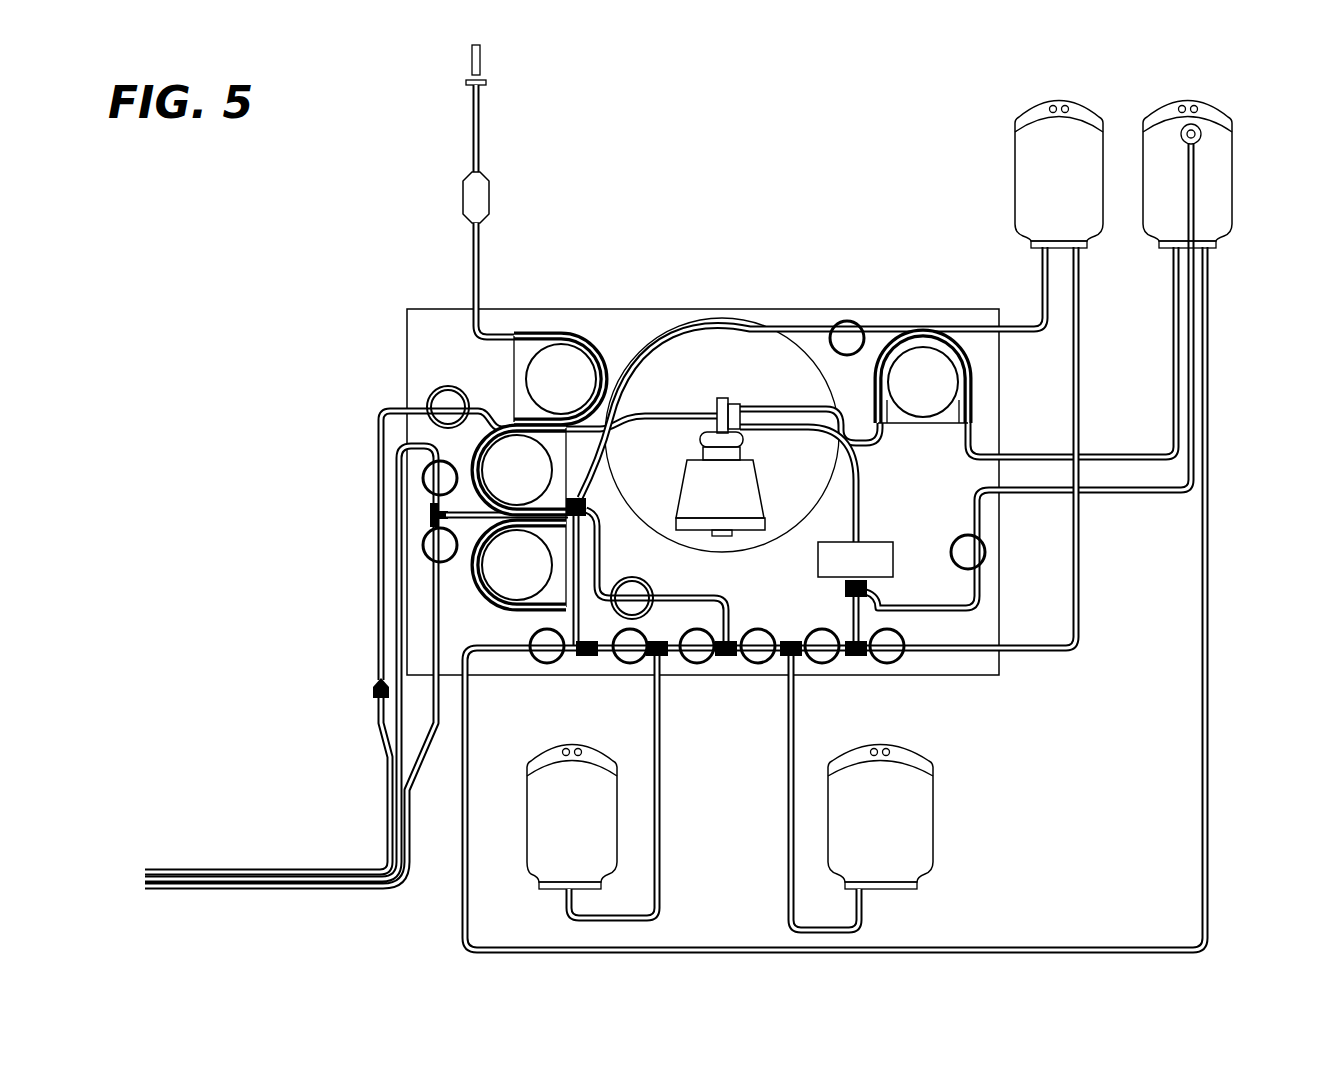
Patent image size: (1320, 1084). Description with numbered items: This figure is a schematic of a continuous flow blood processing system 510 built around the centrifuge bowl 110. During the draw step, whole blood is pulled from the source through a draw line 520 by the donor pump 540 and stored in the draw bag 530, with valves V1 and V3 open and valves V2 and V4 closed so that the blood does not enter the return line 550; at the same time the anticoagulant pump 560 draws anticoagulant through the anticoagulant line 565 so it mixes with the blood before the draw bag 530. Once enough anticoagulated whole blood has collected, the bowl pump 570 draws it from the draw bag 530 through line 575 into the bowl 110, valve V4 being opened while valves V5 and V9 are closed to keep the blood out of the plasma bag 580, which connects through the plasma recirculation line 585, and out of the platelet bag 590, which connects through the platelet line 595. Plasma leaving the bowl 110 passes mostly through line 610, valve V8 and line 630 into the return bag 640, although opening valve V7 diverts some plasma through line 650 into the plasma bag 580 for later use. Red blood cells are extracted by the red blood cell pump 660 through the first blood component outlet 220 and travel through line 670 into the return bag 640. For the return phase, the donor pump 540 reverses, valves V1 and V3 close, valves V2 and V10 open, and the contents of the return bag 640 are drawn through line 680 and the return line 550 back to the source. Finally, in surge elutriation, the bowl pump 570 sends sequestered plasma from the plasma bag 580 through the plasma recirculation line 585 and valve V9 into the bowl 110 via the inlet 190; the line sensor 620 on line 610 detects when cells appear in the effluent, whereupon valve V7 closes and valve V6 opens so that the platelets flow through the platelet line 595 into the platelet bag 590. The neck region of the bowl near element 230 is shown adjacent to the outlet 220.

The blood processing system 510 is at (298, 238).
The anticoagulant line 565 is at (469, 240).
The anticoagulant pump 560 is at (543, 401).
The bowl pump 570 is at (499, 492).
The donor pump 540 is at (499, 587).
The red blood cell pump 660 is at (905, 404).
The centrifuge bowl 110 is at (703, 512).
The inlet 190 is at (715, 412).
The first blood component outlet 220 is at (731, 413).
The outlet line from bowl 230 is at (738, 432).
The line sensor 620 is at (855, 595).
The line 610 is at (858, 474).
The line 575 is at (709, 599).
The draw line 520 is at (398, 523).
The return line 550 is at (410, 845).
The plasma recirculation line 585 is at (1041, 287).
The plasma bag 580 is at (1040, 211).
The return bag 640 is at (1148, 211).
The line 670 is at (1026, 454).
The line 630 is at (1130, 495).
The line 650 is at (1080, 630).
The line 680 is at (1208, 662).
The draw bag 530 is at (553, 862).
The platelet bag 590 is at (861, 862).
The platelet line 595 is at (787, 830).
The valve V1 is at (422, 482).
The valve V2 is at (422, 549).
The valve V3 is at (629, 664).
The valve V4 is at (697, 664).
The valve V5 is at (757, 664).
The valve V6 is at (823, 664).
The valve V7 is at (888, 664).
The valve V8 is at (951, 548).
The valve V9 is at (845, 321).
The valve V10 is at (546, 664).